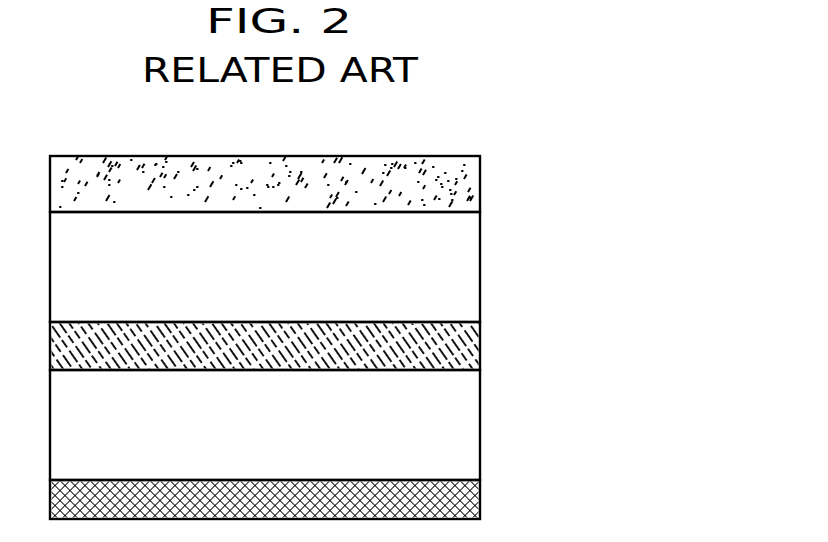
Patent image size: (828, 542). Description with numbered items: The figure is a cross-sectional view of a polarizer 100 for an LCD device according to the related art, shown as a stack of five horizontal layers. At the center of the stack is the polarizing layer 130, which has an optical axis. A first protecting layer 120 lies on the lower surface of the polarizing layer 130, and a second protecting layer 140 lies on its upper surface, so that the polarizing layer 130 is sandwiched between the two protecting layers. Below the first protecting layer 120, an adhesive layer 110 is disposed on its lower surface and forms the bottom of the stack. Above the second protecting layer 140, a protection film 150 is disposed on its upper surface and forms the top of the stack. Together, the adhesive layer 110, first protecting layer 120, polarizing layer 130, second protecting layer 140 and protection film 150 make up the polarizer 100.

The polarizer 100 is at (642, 272).
The adhesive layer 110 is at (460, 497).
The first protecting layer 120 is at (460, 425).
The polarizing layer 130 is at (460, 347).
The second protecting layer 140 is at (460, 270).
The protection film 150 is at (460, 185).